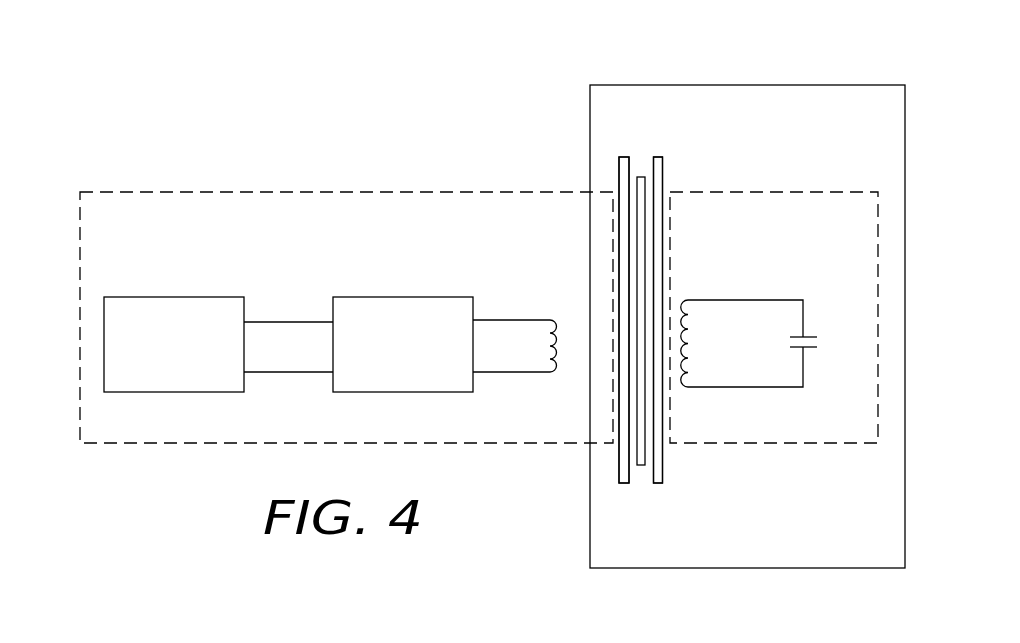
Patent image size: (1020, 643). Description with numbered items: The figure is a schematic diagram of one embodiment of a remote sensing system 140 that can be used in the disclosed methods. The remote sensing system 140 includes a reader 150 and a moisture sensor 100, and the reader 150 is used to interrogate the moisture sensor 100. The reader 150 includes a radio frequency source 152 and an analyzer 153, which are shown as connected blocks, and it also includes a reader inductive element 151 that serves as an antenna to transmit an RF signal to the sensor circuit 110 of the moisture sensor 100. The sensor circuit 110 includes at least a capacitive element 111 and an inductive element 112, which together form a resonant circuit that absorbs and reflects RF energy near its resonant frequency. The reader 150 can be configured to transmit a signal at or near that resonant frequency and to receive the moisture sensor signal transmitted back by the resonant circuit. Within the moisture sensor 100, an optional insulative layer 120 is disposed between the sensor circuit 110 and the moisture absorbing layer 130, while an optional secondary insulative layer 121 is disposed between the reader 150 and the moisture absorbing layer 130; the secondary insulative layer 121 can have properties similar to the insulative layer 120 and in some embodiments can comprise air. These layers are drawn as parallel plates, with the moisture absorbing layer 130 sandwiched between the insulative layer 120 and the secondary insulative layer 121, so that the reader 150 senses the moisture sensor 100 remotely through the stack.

The moisture sensor 100 is at (590, 503).
The sensor circuit 110 is at (758, 192).
The capacitive element 111 is at (807, 335).
The inductive element 112 is at (688, 300).
The insulative layer 120 is at (658, 484).
The secondary insulative layer 121 is at (623, 484).
The moisture absorbing layer 130 is at (641, 177).
The remote sensing system 140 is at (120, 141).
The reader 150 is at (295, 190).
The reader inductive element 151 is at (552, 320).
The radio frequency (RF) source 152 is at (400, 295).
The analyzer 153 is at (175, 297).